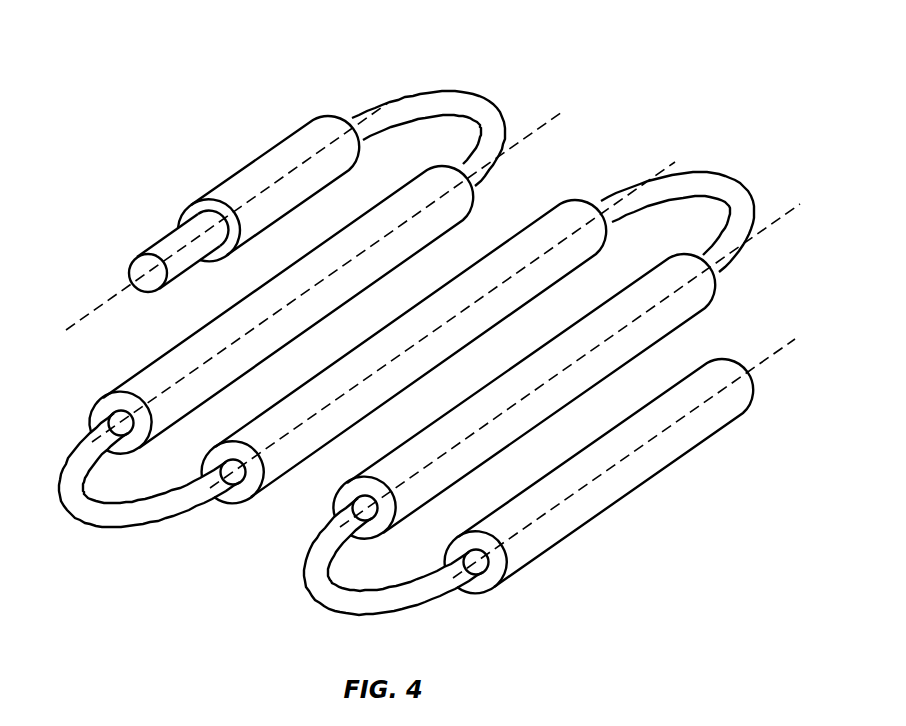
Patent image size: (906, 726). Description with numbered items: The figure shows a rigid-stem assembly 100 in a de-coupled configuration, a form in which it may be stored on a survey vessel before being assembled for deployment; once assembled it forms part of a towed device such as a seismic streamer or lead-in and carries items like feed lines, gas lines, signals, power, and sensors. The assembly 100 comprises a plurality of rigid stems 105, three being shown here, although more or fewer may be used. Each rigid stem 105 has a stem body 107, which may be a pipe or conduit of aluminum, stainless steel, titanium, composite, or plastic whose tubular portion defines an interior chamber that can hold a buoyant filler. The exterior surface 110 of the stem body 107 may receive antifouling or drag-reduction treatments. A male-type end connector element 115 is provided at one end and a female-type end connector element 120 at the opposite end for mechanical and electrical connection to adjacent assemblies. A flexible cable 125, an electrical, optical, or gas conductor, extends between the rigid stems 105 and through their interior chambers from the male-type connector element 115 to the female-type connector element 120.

The rigid-stem assembly 100 is at (648, 66).
The rigid stem 105 is at (407, 379).
The stem body 107 is at (234, 304).
The exterior surface 110 is at (427, 353).
The male-type end connector element 115 is at (252, 163).
The female-type end connector element 120 is at (622, 497).
The flexible cable 125 is at (640, 180).